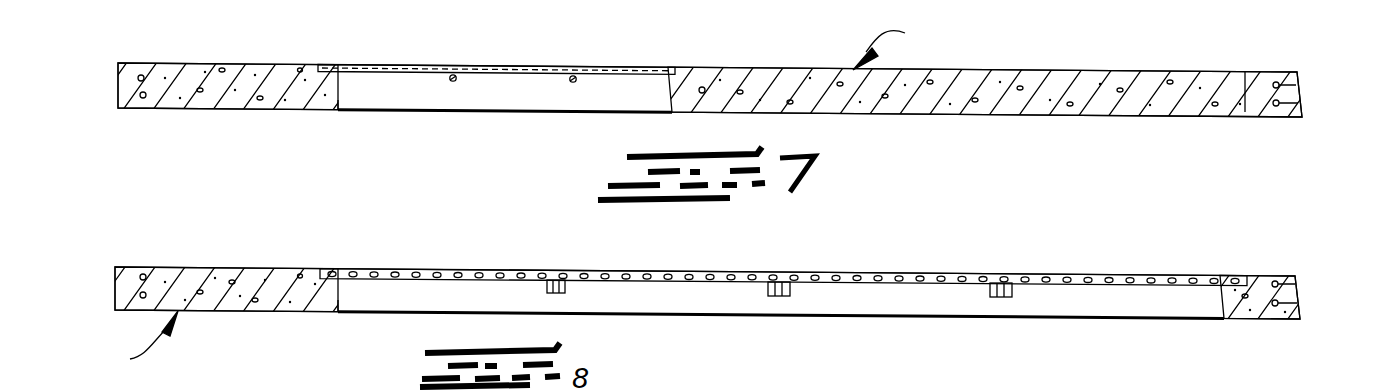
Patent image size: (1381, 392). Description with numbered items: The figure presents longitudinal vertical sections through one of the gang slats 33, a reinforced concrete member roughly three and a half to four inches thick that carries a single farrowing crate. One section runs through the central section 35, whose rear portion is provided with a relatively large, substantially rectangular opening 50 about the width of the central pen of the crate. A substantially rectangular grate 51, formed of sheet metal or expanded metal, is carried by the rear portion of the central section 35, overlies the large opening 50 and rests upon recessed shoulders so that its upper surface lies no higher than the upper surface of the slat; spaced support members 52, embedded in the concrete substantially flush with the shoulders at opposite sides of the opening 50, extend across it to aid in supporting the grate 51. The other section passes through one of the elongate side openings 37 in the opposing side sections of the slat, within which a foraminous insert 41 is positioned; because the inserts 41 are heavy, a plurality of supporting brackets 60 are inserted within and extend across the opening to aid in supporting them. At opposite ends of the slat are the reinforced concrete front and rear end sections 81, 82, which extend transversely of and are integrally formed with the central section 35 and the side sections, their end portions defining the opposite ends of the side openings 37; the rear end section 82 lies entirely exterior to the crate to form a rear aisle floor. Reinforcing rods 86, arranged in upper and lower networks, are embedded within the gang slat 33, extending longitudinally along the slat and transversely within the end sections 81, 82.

In FIG. 7, the gang slat 33 is at (222, 126).
In FIG. 8, the gang slat 33 is at (1015, 332).
In FIG. 7, the central section 35 is at (985, 69).
In FIG. 8, the elongate side openings 37 is at (340, 292).
In FIG. 8, the foraminous inserts 41 is at (937, 271).
In FIG. 7, the large opening 50 is at (340, 92).
In FIG. 7, the grate 51 is at (395, 31).
In FIG. 7, the support members 52 is at (570, 81).
In FIG. 8, the supporting brackets 60 is at (578, 288).
In FIG. 7, the front end section 81 is at (1297, 68).
In FIG. 8, the front end section 81 is at (1293, 272).
In FIG. 7, the rear end section 82 is at (337, 58).
In FIG. 8, the rear end section 82 is at (335, 262).
In FIG. 7, the reinforcing rods 86 is at (138, 80).
In FIG. 8, the reinforcing rods 86 is at (140, 278).